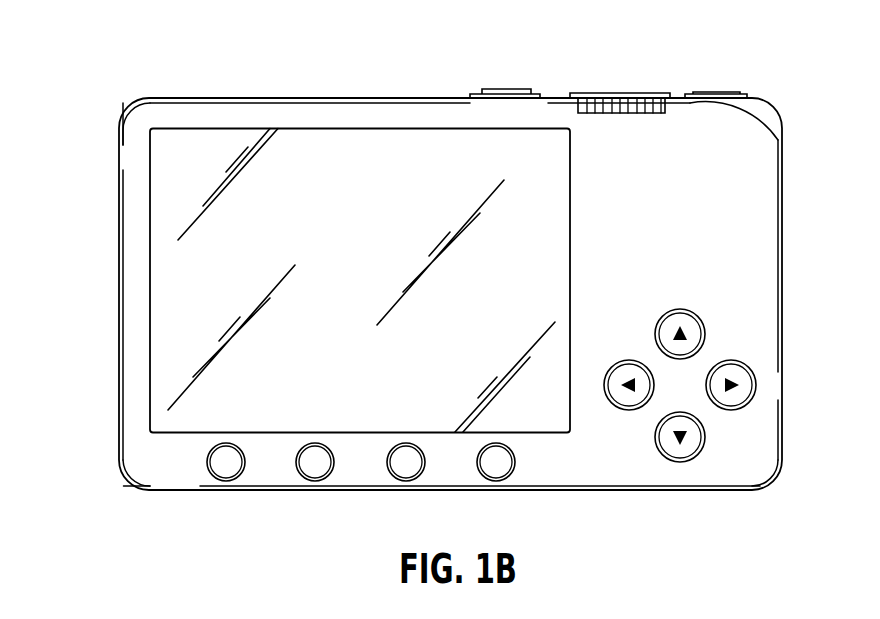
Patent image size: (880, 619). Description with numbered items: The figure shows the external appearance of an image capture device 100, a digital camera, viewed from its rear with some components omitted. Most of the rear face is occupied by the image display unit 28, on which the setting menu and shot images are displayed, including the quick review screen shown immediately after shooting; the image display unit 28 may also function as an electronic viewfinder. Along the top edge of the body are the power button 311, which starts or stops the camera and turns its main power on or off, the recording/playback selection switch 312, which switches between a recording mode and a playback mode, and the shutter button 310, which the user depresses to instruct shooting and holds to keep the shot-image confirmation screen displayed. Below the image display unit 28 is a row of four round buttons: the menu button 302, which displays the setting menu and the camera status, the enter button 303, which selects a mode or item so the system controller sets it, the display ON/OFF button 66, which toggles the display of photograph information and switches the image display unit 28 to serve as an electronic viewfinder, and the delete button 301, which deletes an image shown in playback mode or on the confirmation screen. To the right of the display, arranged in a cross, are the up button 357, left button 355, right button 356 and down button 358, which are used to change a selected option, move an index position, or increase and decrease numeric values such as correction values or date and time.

The image capture device 100 is at (96, 131).
The image display unit 28 is at (336, 140).
The power button 311 is at (505, 89).
The recording/playback selection switch 312 is at (633, 93).
The shutter button 310 is at (717, 93).
The menu button 302 is at (226, 467).
The enter button 303 is at (313, 469).
The display ON/OFF button 66 is at (406, 469).
The delete button 301 is at (501, 469).
The up button 357 is at (690, 322).
The left button 355 is at (620, 372).
The right button 356 is at (742, 376).
The down button 358 is at (695, 440).